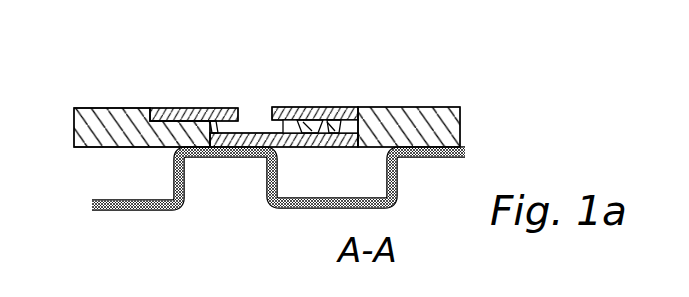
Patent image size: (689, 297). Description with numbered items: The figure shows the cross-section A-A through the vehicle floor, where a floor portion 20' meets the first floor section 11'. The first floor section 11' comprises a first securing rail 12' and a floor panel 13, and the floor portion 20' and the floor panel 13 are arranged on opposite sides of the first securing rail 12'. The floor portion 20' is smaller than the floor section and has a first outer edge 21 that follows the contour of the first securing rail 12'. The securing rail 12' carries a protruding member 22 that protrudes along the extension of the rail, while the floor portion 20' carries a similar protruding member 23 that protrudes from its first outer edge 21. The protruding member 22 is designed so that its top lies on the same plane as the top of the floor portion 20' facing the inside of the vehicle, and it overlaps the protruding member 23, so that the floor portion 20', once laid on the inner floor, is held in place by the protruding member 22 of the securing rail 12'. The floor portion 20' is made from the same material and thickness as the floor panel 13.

The first floor section 11' is at (409, 80).
The first securing rail 12' is at (301, 74).
The floor panel 13 is at (366, 80).
The floor portion 20' is at (131, 82).
The first outer edge 21 is at (132, 108).
The protruding member 22 is at (173, 108).
The protruding member 23 is at (195, 158).